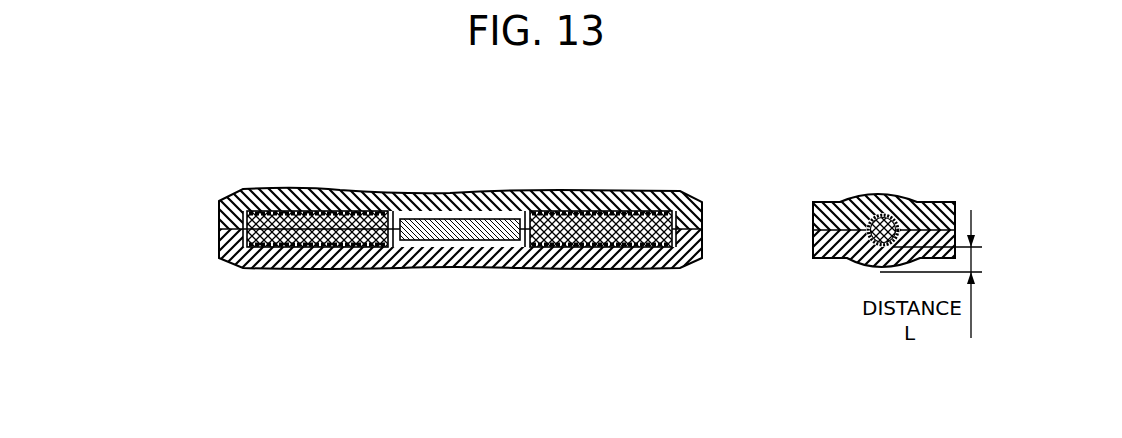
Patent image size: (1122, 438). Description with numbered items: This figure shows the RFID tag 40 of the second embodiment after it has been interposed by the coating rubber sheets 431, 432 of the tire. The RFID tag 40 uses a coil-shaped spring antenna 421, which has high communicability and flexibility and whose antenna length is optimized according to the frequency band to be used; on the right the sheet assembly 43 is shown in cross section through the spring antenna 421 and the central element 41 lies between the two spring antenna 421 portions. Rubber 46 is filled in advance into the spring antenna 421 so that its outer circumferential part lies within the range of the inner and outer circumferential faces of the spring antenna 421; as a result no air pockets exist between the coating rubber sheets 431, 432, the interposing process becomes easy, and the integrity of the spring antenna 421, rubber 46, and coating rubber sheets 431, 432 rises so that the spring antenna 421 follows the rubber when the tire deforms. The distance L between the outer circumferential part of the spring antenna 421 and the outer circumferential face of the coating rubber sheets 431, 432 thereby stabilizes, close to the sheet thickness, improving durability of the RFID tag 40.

The RFID tag 40 is at (682, 148).
The pressure sensitive member 41 is at (470, 228).
The spring antenna 421 is at (369, 213).
The sheet body 43 is at (125, 186).
The coating rubber sheet 431 is at (232, 248).
The coating rubber sheet 432 is at (232, 213).
The rubber 46 is at (292, 237).